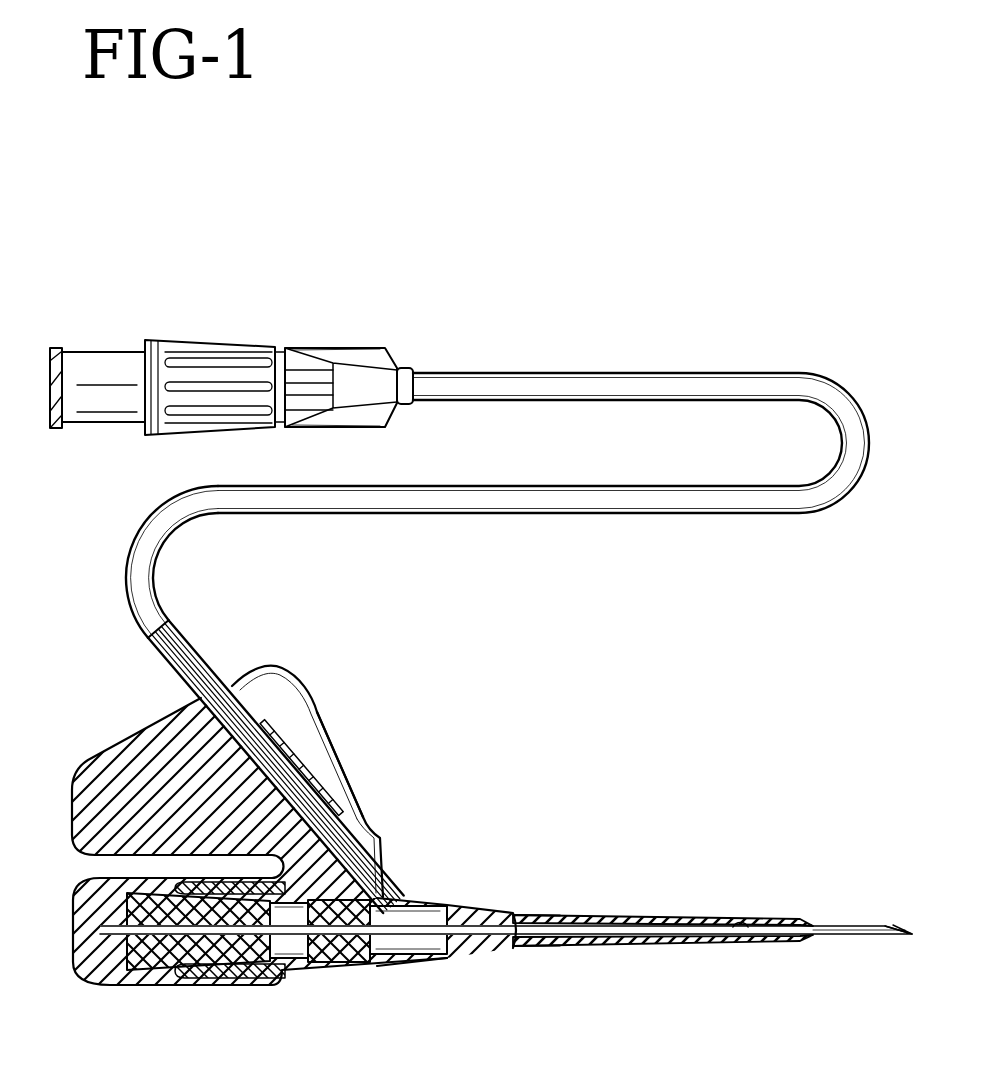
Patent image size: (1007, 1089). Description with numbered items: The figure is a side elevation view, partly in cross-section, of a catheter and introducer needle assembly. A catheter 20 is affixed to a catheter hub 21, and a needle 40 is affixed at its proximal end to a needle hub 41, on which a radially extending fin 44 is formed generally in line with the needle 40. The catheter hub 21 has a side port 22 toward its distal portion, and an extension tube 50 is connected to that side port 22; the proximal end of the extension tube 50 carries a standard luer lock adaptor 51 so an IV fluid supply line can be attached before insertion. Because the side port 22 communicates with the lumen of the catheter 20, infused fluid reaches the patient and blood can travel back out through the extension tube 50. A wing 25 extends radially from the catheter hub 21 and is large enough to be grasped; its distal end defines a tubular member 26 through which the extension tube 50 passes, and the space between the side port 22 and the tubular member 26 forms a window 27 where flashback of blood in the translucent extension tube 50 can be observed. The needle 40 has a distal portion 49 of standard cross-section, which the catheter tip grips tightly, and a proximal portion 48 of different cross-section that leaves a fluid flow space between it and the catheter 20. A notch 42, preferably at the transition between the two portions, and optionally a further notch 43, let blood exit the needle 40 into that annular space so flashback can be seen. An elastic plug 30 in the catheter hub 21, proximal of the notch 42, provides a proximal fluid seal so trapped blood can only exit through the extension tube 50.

The catheter 20 is at (657, 917).
The catheter hub 21 is at (412, 960).
The side port 22 is at (410, 903).
The wing 25 is at (72, 795).
The tubular member 26 is at (295, 757).
The window 27 is at (375, 838).
The elastic plug 30 is at (332, 955).
The needle 40 is at (867, 935).
The needle hub 41 is at (110, 985).
The notch 42 is at (745, 928).
The notch 43 is at (415, 930).
The fin 44 is at (288, 690).
The proximal portion 48 is at (538, 925).
The distal portion 49 is at (833, 923).
The extension tube 50 is at (162, 555).
The luer lock adaptor 51 is at (193, 340).